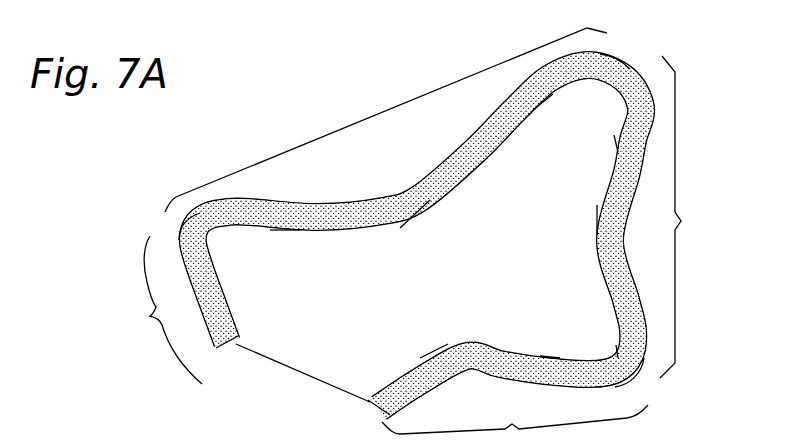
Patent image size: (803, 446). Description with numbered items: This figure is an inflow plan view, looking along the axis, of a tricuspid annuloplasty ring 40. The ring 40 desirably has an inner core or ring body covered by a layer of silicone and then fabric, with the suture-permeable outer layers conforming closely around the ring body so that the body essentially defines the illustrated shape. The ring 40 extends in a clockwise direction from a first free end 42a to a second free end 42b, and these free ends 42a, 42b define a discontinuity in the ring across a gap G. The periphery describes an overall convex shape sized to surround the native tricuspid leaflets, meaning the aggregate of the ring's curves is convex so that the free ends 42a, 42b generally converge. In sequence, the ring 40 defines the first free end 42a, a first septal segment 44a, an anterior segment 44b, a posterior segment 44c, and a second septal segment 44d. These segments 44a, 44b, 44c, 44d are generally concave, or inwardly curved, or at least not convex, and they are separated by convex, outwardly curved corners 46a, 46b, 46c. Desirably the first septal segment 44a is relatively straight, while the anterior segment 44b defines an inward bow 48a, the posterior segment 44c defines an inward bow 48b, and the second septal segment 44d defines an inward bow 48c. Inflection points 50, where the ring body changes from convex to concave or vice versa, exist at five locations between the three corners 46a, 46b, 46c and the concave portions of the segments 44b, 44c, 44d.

The tricuspid annuloplasty ring 40 is at (150, 186).
The first free end 42a is at (227, 351).
The second free end 42b is at (380, 413).
The first septal segment 44a is at (151, 310).
The anterior segment 44b is at (386, 120).
The posterior segment 44c is at (694, 217).
The second septal segment 44d is at (515, 425).
The first corner 46a is at (178, 221).
The second corner 46b is at (617, 54).
The third corner 46c is at (640, 376).
The inward bow 48a is at (417, 220).
The inward bow 48b is at (592, 218).
The inward bow 48c is at (435, 345).
The inflection points 50 is at (280, 233).
The gap G is at (364, 401).